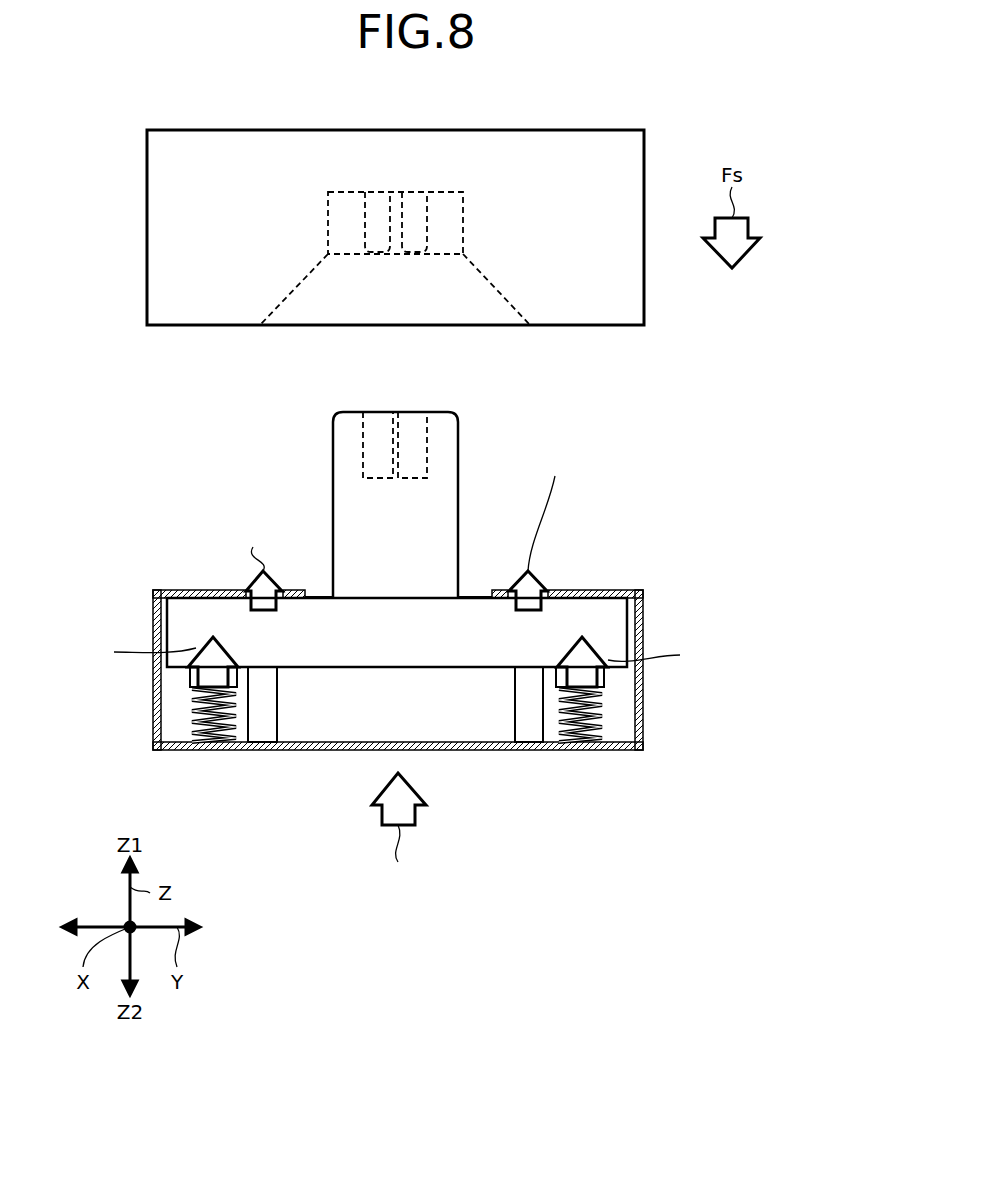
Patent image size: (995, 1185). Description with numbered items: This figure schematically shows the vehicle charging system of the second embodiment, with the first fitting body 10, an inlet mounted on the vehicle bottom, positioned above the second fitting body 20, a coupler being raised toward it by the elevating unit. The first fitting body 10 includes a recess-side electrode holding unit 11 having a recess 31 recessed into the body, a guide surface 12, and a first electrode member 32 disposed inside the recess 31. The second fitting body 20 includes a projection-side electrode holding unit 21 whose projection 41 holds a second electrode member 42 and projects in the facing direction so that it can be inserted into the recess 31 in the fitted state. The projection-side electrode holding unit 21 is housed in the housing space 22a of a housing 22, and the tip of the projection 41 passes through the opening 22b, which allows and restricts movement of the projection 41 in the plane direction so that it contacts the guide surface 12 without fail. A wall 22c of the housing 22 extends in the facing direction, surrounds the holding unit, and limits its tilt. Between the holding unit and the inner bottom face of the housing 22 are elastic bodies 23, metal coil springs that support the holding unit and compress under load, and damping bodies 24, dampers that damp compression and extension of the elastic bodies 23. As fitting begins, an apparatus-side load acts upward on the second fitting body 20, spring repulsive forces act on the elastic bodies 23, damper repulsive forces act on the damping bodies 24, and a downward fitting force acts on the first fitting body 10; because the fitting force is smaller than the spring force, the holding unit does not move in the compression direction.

The first fitting body 10 is at (228, 344).
The recess-side electrode holding unit 11 is at (615, 310).
The guide surface 12 is at (515, 310).
The second fitting body 20 is at (226, 470).
The projection-side electrode holding unit 21 is at (360, 676).
The housing 22 is at (398, 662).
The housing space 22a is at (467, 717).
The opening 22b is at (480, 597).
The wall 22c is at (153, 698).
The elastic body 23 is at (190, 730).
The damping body 24 is at (290, 722).
The recess 31 is at (446, 278).
The first electrode member 32 is at (393, 223).
The projection 41 is at (333, 458).
The second electrode member 42 is at (380, 478).